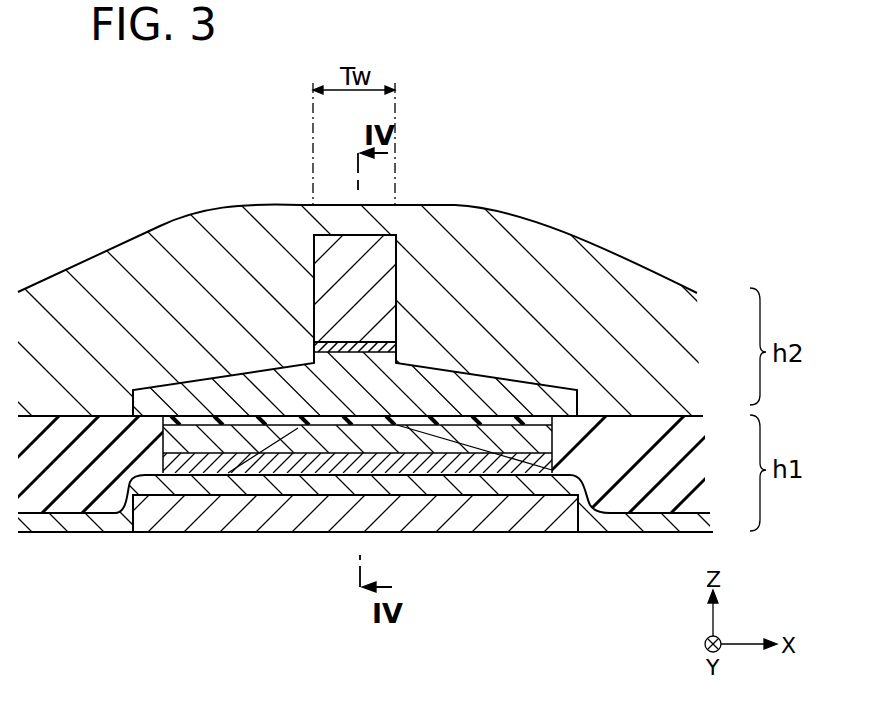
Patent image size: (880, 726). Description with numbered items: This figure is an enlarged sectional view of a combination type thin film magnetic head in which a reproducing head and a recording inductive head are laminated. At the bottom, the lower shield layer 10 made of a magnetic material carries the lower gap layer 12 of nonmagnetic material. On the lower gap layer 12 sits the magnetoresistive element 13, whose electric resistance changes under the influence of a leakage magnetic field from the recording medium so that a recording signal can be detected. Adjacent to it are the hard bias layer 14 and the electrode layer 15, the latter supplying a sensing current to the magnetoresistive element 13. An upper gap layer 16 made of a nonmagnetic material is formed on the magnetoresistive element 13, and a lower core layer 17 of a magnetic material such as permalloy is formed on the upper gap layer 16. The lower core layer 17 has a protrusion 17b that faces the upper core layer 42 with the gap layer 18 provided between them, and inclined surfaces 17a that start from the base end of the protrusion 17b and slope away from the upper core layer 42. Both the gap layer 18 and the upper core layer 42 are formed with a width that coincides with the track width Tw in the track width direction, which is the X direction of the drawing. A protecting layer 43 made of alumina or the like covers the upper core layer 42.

The lower shield layer 10 is at (487, 510).
The lower gap layer 12 is at (667, 523).
The magnetoresistive element 13 is at (400, 453).
The hard bias layer 14 is at (533, 472).
The electrode layer 15 is at (535, 440).
The upper gap layer 16 is at (322, 428).
The lower core layer 17 is at (557, 407).
The inclined surfaces 17a is at (200, 382).
The protrusion 17b is at (397, 360).
The gap layer 18 is at (313, 345).
The upper core layer 42 is at (397, 262).
The protecting layer 43 is at (182, 250).